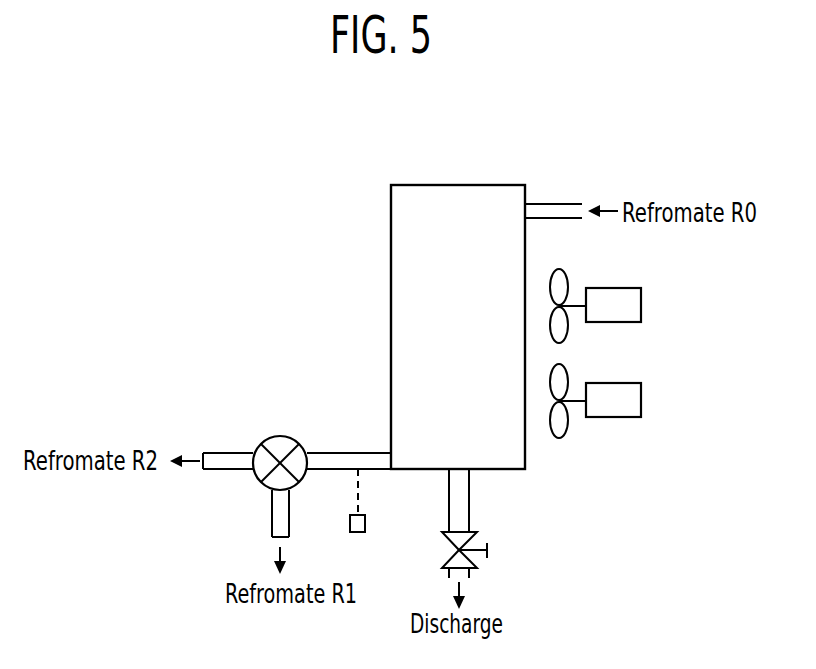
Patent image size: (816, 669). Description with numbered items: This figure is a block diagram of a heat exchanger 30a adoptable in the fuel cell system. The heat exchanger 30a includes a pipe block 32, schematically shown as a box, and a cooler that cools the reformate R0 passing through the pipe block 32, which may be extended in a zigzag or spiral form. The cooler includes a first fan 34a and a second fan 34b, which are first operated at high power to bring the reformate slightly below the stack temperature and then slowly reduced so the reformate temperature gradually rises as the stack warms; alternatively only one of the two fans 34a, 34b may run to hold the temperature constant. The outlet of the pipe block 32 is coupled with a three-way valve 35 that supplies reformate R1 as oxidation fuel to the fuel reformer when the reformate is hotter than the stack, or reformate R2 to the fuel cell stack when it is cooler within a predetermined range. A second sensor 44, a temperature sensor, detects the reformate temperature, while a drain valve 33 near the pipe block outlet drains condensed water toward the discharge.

The heat exchanger 30a is at (660, 138).
The pipe block 32 is at (466, 185).
The discharge valve 33 is at (478, 535).
The first fan 34a is at (641, 302).
The second fan 34b is at (641, 397).
The 3-way valve 35 is at (257, 485).
The second sensor 44 is at (365, 525).